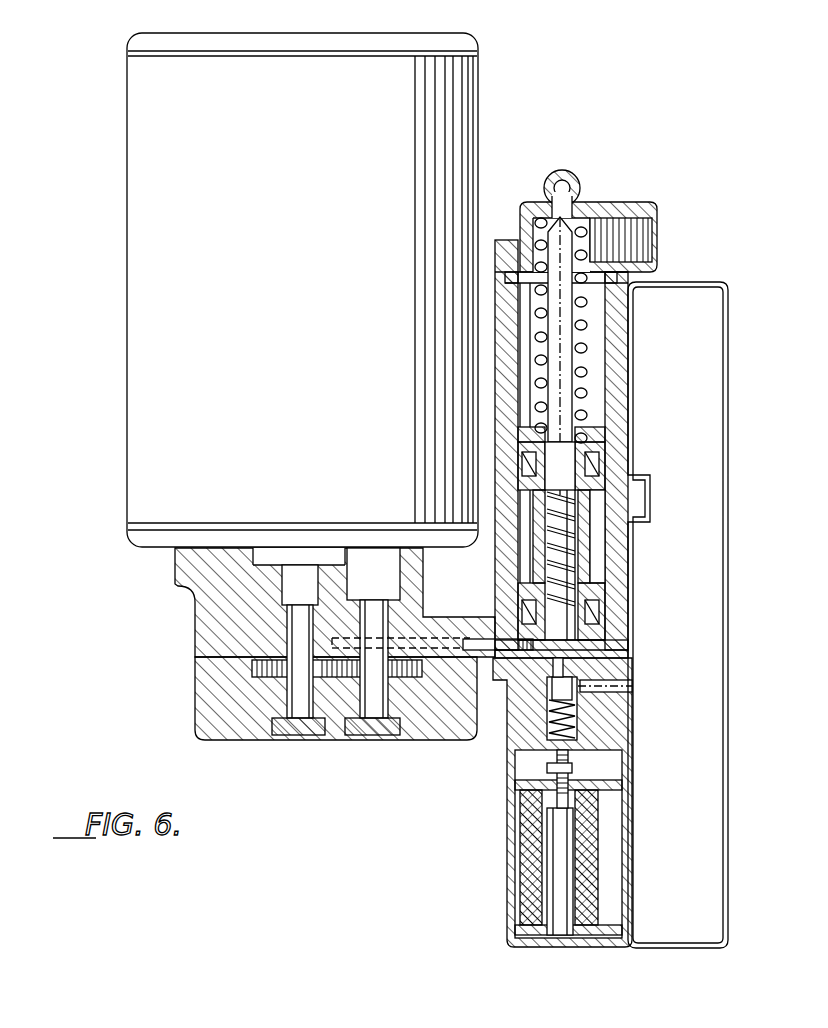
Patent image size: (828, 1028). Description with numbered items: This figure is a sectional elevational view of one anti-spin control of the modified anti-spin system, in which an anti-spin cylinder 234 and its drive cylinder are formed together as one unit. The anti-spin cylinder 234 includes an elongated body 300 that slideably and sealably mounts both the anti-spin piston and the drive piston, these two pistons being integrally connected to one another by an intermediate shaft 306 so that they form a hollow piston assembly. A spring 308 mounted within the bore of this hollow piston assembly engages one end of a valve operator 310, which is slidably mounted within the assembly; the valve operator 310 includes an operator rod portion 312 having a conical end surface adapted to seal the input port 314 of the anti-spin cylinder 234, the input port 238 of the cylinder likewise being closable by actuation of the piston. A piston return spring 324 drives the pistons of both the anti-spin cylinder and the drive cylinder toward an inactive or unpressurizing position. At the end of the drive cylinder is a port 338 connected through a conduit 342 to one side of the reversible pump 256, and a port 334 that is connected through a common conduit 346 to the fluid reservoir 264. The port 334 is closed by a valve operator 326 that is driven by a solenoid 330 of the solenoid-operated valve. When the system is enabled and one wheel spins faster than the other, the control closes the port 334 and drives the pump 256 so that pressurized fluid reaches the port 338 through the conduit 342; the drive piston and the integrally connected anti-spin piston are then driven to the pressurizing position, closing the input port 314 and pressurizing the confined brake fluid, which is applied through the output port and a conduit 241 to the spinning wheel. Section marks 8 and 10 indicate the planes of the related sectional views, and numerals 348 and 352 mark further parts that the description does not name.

The reversible pump 256 is at (178, 712).
The port 338 is at (505, 637).
The anti-spin cylinder 234 is at (593, 449).
The elongated body 300 is at (626, 428).
The input port 314 is at (572, 214).
The conduit 241 is at (655, 252).
The input port 238 is at (578, 194).
The operator rod portion 312 is at (568, 316).
The piston return spring 324 is at (584, 350).
The conduit 342 is at (602, 443).
The valve operator 310 is at (574, 474).
The spring 308 is at (592, 565).
The intermediate shaft 306 is at (578, 538).
The seal housing 348 is at (600, 630).
The washer 352 is at (622, 641).
The solenoid 330 is at (530, 848).
The valve operator 326 is at (570, 704).
The port 334 is at (556, 669).
The common conduit 346 is at (602, 688).
The fluid reservoir 264 is at (722, 446).
The section line 8- 8 is at (560, 145).
The section line 10- 10 is at (98, 657).